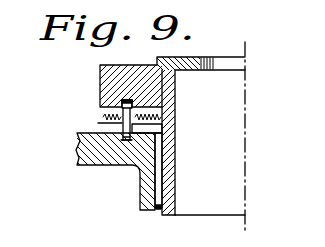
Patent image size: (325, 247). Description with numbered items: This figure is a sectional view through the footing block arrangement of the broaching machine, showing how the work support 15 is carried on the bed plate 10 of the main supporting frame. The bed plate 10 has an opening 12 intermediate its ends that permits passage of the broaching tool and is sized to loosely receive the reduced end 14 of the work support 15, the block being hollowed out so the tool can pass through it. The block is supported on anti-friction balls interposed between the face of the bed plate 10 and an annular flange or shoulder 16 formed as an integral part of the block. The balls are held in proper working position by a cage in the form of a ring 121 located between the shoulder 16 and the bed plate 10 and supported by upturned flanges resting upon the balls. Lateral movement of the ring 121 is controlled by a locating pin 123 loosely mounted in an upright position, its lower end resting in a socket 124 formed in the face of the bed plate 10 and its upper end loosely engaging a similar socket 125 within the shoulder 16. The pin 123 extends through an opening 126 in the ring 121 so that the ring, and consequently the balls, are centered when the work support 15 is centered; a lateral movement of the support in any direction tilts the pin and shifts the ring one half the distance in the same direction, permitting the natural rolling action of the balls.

The bed plate 10 is at (78, 152).
The opening 12 is at (157, 210).
The reduced end 14 is at (178, 205).
The work support 15 is at (168, 94).
The annular flange 16 is at (100, 82).
The ring 121 is at (108, 121).
The locating pin 123 is at (163, 131).
The socket 124 is at (125, 141).
The socket 125 is at (127, 98).
The opening 126 is at (122, 113).